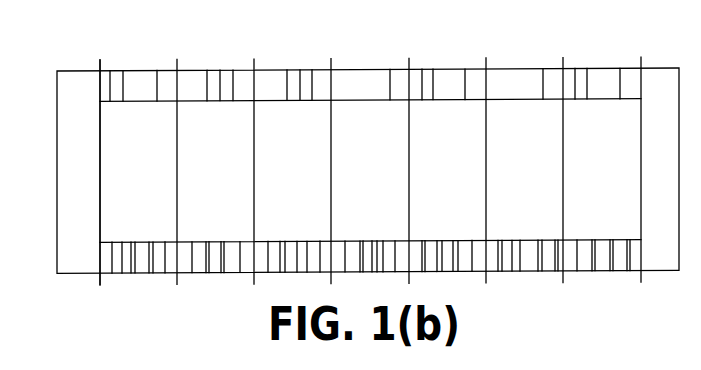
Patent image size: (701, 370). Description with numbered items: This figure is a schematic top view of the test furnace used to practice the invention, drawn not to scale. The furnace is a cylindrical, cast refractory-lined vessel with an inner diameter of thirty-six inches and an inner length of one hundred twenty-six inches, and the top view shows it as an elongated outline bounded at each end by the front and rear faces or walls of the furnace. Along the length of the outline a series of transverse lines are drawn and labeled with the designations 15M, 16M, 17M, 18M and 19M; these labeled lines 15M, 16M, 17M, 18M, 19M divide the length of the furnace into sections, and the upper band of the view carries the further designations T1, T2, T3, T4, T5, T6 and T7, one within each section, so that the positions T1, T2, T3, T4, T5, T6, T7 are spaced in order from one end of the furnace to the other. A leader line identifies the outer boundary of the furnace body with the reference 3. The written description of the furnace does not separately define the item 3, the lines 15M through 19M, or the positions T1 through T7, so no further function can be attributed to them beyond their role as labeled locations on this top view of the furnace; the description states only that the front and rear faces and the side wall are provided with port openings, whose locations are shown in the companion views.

The film carrier tape 3 is at (496, 70).
The mark 15M is at (115, 164).
The mark 16M is at (193, 164).
The mark 17M is at (270, 163).
The mark 18M is at (425, 163).
The mark 19M is at (579, 162).
The terminal T1 is at (136, 96).
The terminal T2 is at (225, 96).
The terminal T3 is at (304, 96).
The terminal T4 is at (389, 95).
The terminal T5 is at (448, 95).
The terminal T6 is at (543, 95).
The terminal T7 is at (603, 94).